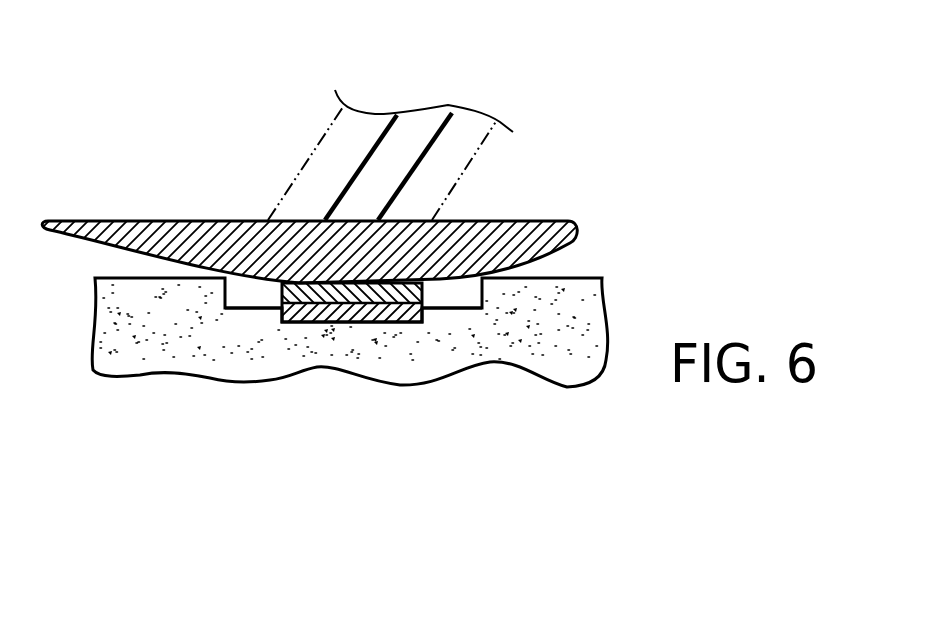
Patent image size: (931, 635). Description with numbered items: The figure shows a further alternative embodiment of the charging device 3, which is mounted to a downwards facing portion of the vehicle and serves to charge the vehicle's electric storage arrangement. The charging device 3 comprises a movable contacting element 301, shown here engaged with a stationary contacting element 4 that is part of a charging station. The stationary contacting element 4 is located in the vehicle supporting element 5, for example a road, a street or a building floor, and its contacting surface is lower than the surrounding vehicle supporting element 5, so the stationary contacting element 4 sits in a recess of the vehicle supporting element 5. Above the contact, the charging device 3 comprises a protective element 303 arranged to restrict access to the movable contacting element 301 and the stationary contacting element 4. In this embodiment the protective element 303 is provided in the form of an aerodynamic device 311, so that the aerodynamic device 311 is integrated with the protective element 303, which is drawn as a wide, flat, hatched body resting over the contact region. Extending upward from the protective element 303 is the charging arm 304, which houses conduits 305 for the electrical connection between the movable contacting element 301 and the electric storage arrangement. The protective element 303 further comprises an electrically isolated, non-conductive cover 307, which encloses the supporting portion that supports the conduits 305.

The charging device 3 is at (158, 100).
The protective element 303 is at (309, 230).
The aerodynamic device 311 is at (202, 245).
The charging arm 304 is at (280, 197).
The conduits 305 is at (364, 156).
The cover 307 is at (470, 166).
The vehicle supporting element 5 is at (585, 278).
The stationary contacting element 4 is at (311, 323).
The movable contacting element 301 is at (385, 293).